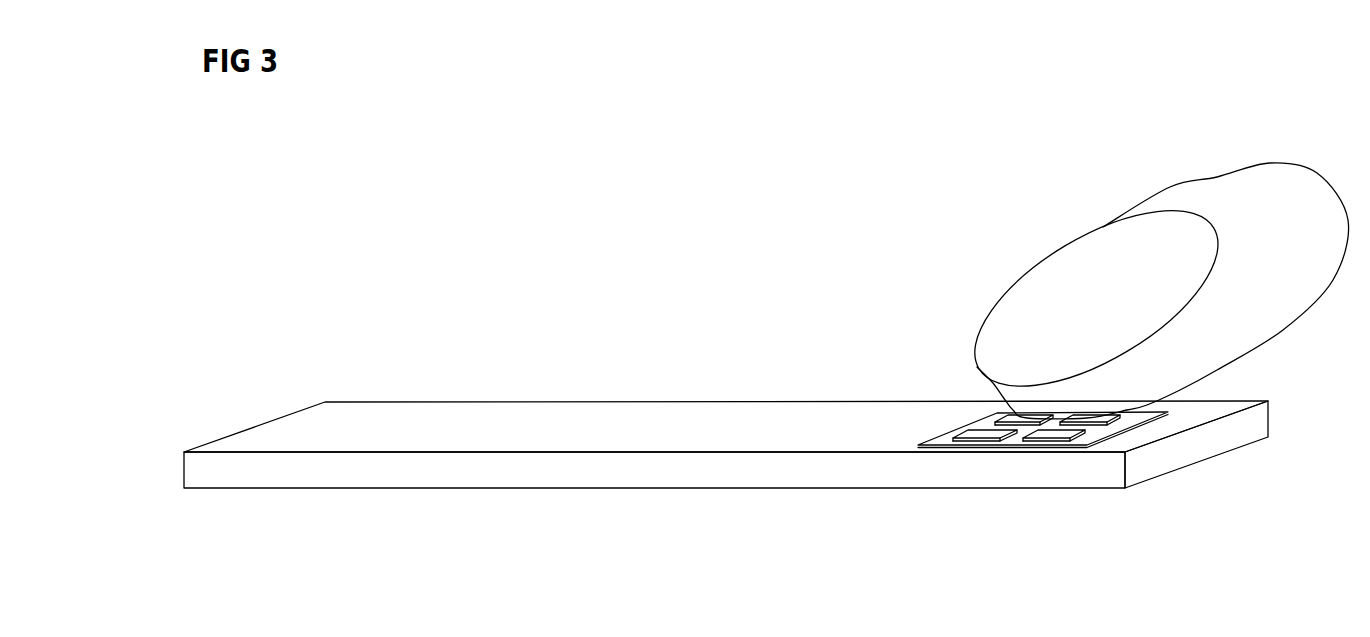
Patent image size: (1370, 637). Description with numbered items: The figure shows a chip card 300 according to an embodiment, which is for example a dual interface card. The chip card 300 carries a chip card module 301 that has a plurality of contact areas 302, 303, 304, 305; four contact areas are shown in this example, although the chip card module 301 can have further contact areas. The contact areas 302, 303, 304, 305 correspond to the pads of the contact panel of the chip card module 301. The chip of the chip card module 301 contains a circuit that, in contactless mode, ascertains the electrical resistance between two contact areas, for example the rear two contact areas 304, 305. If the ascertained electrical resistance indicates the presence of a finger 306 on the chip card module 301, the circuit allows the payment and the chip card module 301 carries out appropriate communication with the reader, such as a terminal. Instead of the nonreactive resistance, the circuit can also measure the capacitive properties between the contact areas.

The chip card 300 is at (1185, 92).
The chip card module 301 is at (978, 425).
The contact area 302 is at (970, 442).
The contact area 303 is at (1047, 442).
The contact area 304 is at (1013, 413).
The contact area 305 is at (1107, 413).
The finger 306 is at (1170, 185).